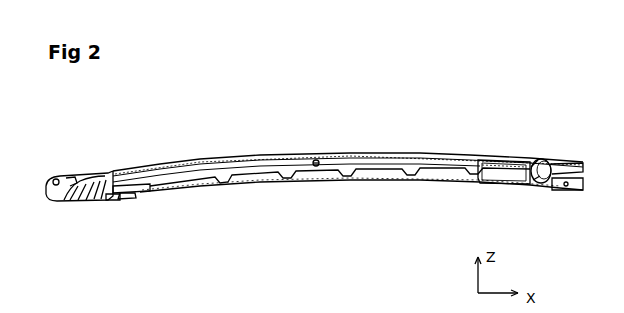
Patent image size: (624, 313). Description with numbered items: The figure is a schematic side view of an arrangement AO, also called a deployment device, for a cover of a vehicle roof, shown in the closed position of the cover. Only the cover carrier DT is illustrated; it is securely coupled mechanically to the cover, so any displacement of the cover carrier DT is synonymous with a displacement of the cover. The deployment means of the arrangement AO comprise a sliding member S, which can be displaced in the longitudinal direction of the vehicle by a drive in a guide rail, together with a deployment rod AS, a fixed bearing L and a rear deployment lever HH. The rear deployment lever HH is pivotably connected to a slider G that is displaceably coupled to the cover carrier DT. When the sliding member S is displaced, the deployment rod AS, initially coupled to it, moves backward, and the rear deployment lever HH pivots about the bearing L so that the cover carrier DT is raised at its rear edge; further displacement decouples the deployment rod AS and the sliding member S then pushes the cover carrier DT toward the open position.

The arrangement AO is at (511, 91).
The cover carrier DT is at (352, 152).
The deployment rod AS is at (303, 180).
The sliding member S is at (118, 198).
The slider G is at (522, 186).
The rear deployment lever HH is at (548, 186).
The fixed bearing L is at (567, 185).